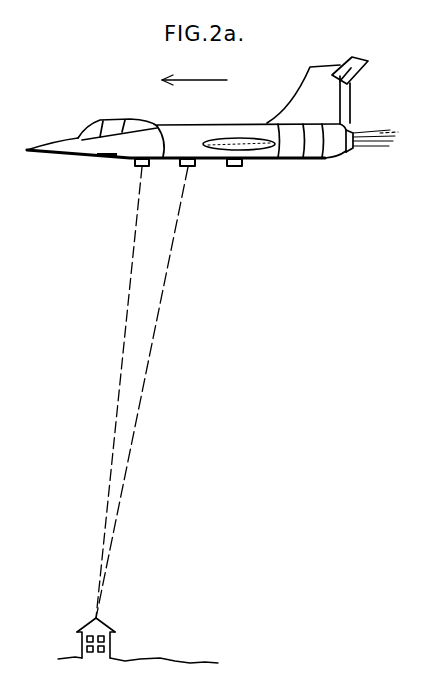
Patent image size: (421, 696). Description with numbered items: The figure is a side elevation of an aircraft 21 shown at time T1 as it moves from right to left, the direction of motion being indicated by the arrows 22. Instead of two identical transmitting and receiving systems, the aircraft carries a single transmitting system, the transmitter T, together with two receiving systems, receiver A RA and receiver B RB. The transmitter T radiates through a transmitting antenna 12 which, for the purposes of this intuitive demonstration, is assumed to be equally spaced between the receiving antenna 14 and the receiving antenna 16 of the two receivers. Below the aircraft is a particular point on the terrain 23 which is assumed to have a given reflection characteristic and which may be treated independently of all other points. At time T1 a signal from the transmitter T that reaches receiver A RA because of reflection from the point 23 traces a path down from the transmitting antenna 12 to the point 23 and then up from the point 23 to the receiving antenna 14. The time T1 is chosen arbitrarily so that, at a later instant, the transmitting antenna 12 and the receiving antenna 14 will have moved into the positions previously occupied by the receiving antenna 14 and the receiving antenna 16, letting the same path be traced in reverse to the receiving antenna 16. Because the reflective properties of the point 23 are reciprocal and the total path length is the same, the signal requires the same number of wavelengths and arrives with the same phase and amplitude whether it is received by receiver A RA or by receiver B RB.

The aircraft 21 is at (218, 124).
The arrows 22 is at (194, 72).
The receiving antenna 14 is at (139, 167).
The transmitting antenna 12 is at (191, 167).
The receiving antenna 16 is at (230, 167).
The point on the terrain 23 is at (100, 621).
The time T1 is at (56, 123).
The receiver A RA is at (137, 166).
The transmitter T is at (179, 166).
The receiver B RB is at (243, 165).